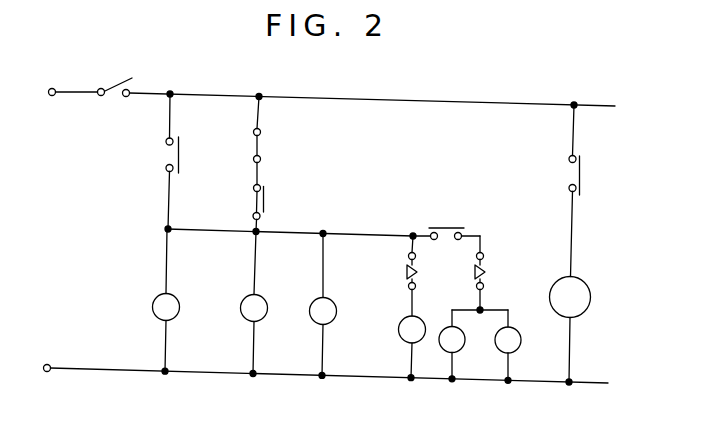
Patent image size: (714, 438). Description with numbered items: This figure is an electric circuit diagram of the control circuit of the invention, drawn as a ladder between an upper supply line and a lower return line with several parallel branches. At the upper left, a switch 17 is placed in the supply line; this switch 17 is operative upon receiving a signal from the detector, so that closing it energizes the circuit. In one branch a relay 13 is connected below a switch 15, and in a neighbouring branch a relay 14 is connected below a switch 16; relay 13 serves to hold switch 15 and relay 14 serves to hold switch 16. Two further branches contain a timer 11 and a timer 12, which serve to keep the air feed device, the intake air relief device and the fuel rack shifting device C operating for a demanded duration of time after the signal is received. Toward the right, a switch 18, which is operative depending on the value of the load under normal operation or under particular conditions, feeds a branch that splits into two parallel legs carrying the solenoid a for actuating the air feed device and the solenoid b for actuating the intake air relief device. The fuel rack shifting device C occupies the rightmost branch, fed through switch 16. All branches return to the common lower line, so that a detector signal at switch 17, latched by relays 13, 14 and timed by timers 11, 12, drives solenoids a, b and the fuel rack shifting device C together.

The timer 11 is at (244, 298).
The timer 12 is at (314, 300).
The relay 13 is at (157, 296).
The relay 14 is at (404, 318).
The switch 15 is at (264, 196).
The switch 16 is at (592, 165).
The switch 17 is at (165, 151).
The switch 18 is at (449, 227).
The solenoid a is at (463, 336).
The solenoid b is at (520, 338).
The fuel rack shifting device C is at (594, 276).